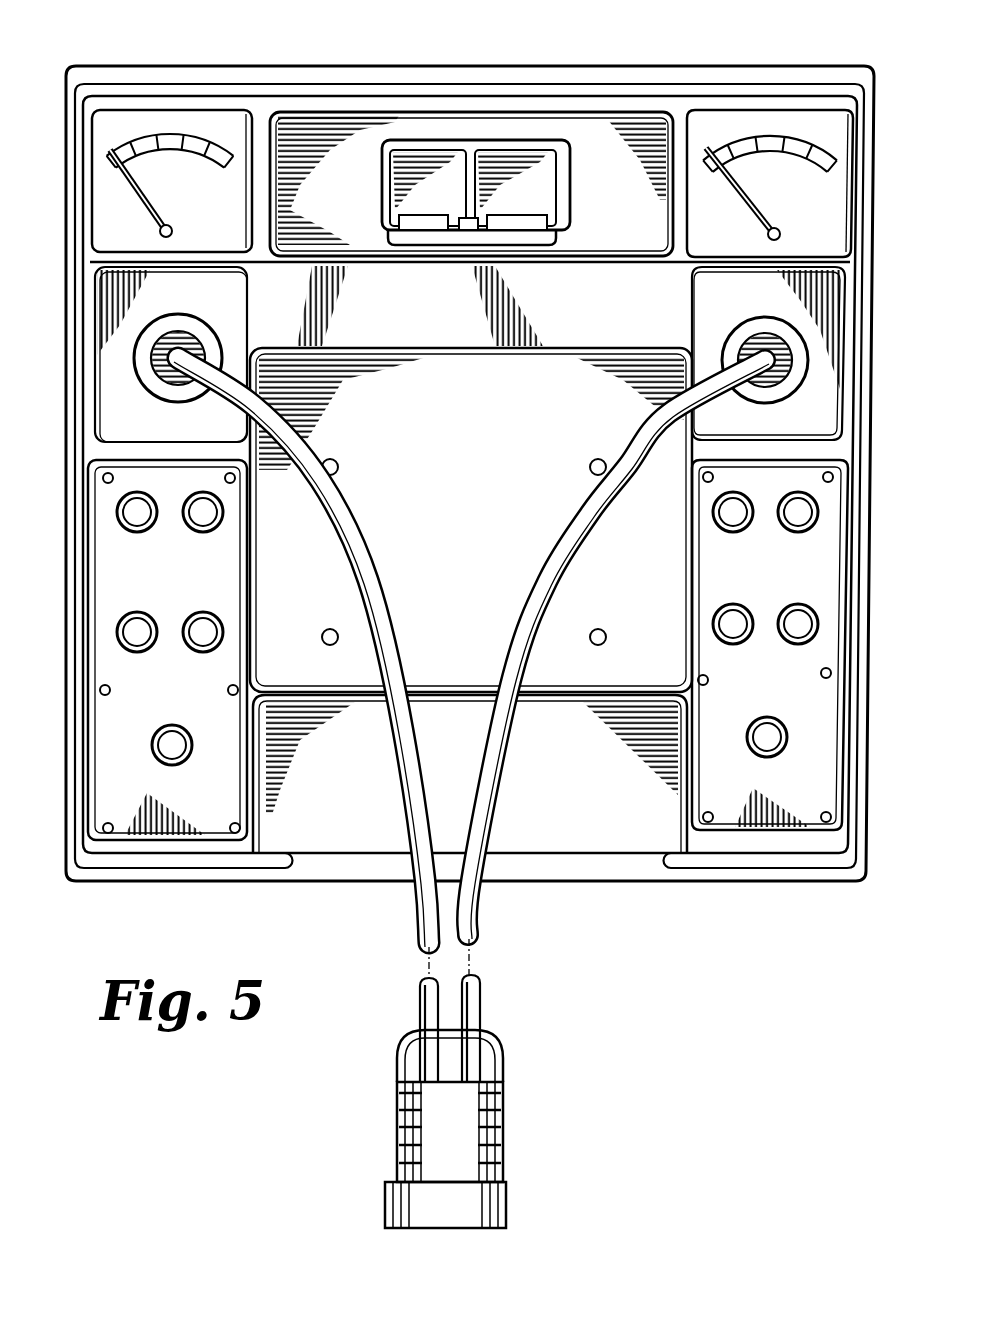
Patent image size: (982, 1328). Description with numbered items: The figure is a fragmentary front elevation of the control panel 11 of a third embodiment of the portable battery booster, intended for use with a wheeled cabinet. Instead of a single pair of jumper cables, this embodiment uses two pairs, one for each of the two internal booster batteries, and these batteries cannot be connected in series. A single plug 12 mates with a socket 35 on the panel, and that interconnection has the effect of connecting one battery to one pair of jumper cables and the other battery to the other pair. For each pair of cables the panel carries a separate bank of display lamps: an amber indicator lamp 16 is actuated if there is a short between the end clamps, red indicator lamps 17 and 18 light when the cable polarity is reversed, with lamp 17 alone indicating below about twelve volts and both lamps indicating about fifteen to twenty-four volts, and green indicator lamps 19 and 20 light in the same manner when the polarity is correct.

The control panel 11 is at (440, 58).
The socket 35 is at (527, 166).
The indicator lamp 19 is at (130, 513).
The indicator lamp 20 is at (208, 513).
The indicator lamp 17 is at (130, 633).
The indicator lamp 18 is at (208, 633).
The indicator lamp 16 is at (184, 745).
The plug 12 is at (457, 1156).